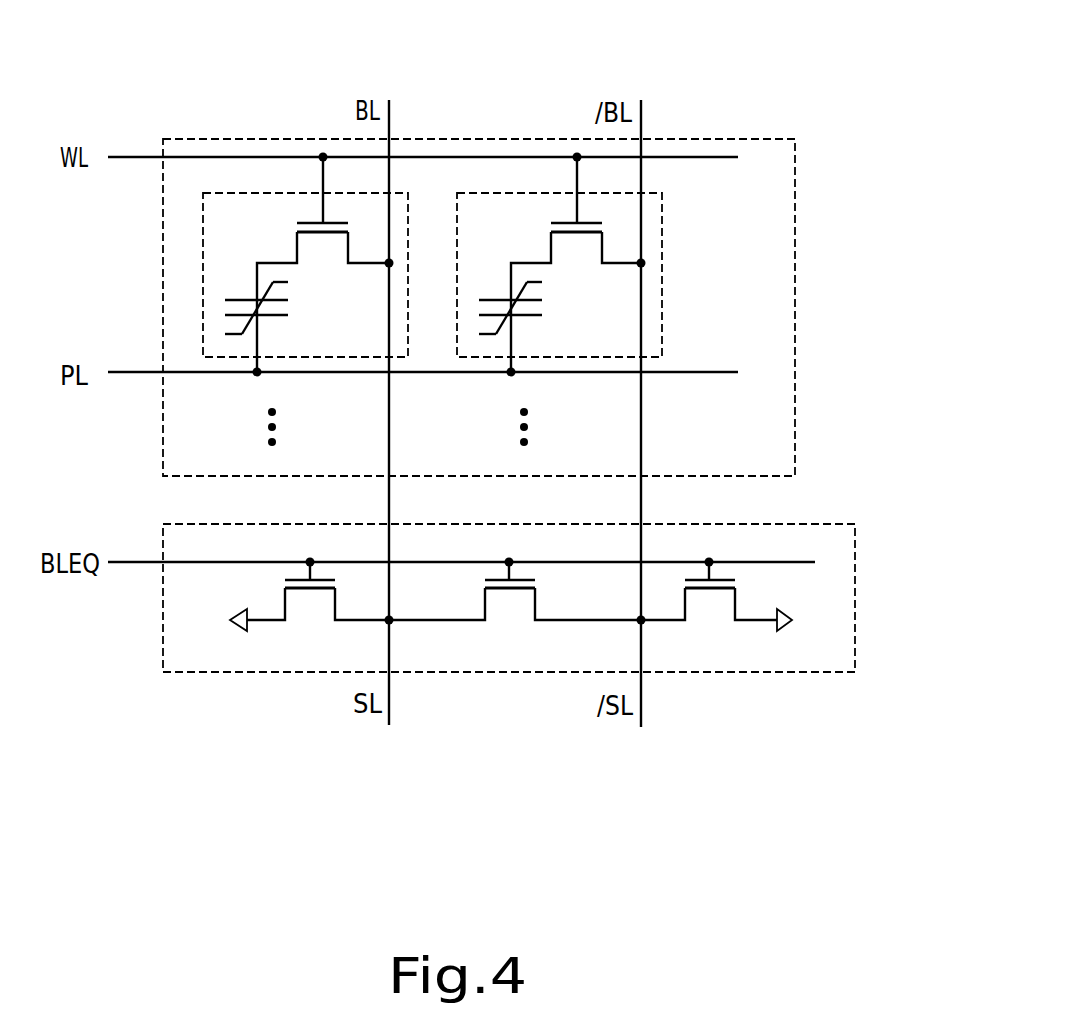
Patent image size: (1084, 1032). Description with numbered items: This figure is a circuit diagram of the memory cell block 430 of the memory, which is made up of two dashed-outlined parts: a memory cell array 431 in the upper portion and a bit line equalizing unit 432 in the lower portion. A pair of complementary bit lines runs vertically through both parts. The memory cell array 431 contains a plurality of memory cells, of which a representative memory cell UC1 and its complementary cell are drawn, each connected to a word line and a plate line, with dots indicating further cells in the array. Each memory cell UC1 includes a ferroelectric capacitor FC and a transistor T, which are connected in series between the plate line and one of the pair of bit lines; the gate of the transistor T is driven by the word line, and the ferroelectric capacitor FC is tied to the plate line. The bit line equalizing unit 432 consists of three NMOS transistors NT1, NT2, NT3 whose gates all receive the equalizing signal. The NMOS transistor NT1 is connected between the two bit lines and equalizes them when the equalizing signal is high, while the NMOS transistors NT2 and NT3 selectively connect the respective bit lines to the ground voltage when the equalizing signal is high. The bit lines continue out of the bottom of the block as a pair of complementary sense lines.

The memory cell block 430 is at (681, 70).
The memory cell array 431 is at (795, 318).
The bit line equalizing unit 432 is at (855, 597).
The memory cell UC1 is at (203, 272).
The transistor T is at (323, 264).
The ferroelectric capacitor FC is at (274, 308).
The NMOS transistor NT1 is at (515, 606).
The NMOS transistor NT2 is at (309, 606).
The NMOS transistor NT3 is at (716, 606).